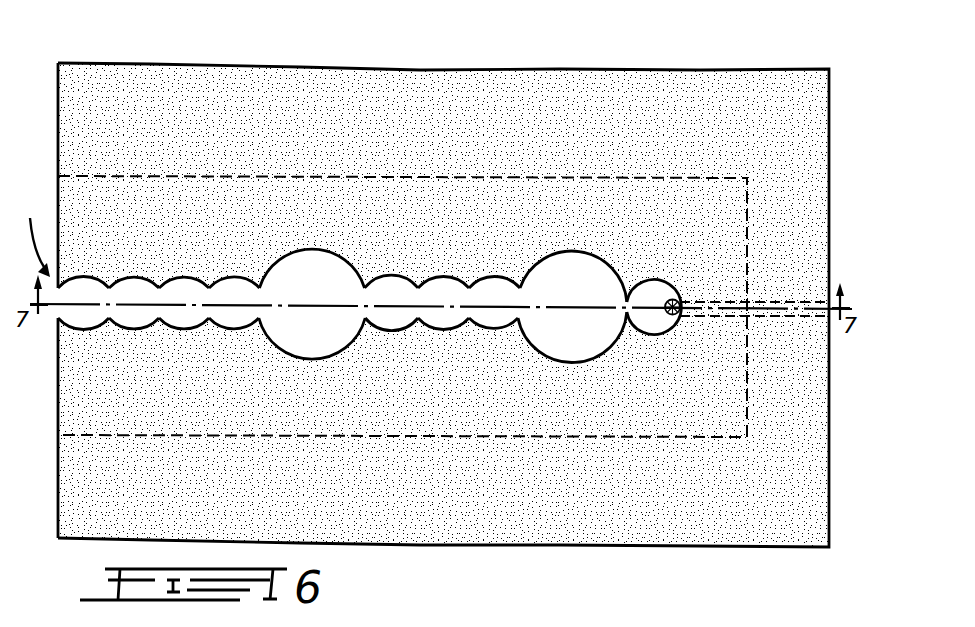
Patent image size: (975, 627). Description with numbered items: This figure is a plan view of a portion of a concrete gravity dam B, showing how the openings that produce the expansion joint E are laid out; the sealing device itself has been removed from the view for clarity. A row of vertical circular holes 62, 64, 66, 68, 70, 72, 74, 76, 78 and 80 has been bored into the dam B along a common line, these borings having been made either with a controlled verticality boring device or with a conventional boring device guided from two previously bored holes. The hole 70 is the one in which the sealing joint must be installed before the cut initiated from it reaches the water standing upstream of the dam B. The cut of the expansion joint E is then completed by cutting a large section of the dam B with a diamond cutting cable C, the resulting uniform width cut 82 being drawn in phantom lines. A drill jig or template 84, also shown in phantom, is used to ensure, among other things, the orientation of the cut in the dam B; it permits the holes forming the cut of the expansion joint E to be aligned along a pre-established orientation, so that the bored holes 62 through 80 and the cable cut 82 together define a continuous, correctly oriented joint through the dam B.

The vertical circular hole 62 is at (232, 330).
The vertical circular hole 64 is at (393, 284).
The vertical circular hole 66 is at (501, 283).
The vertical circular hole 68 is at (653, 334).
The vertical circular hole 70 is at (290, 353).
The vertical circular hole 72 is at (445, 283).
The vertical circular hole 74 is at (600, 356).
The vertical circular hole 76 is at (176, 328).
The vertical circular hole 78 is at (126, 328).
The vertical circular hole 80 is at (76, 328).
The uniform width cut 82 is at (770, 296).
The drill jig or template 84 is at (697, 178).
The gravity dam B is at (618, 56).
The diamond cutting cable C is at (686, 320).
The expansion joint E is at (34, 231).